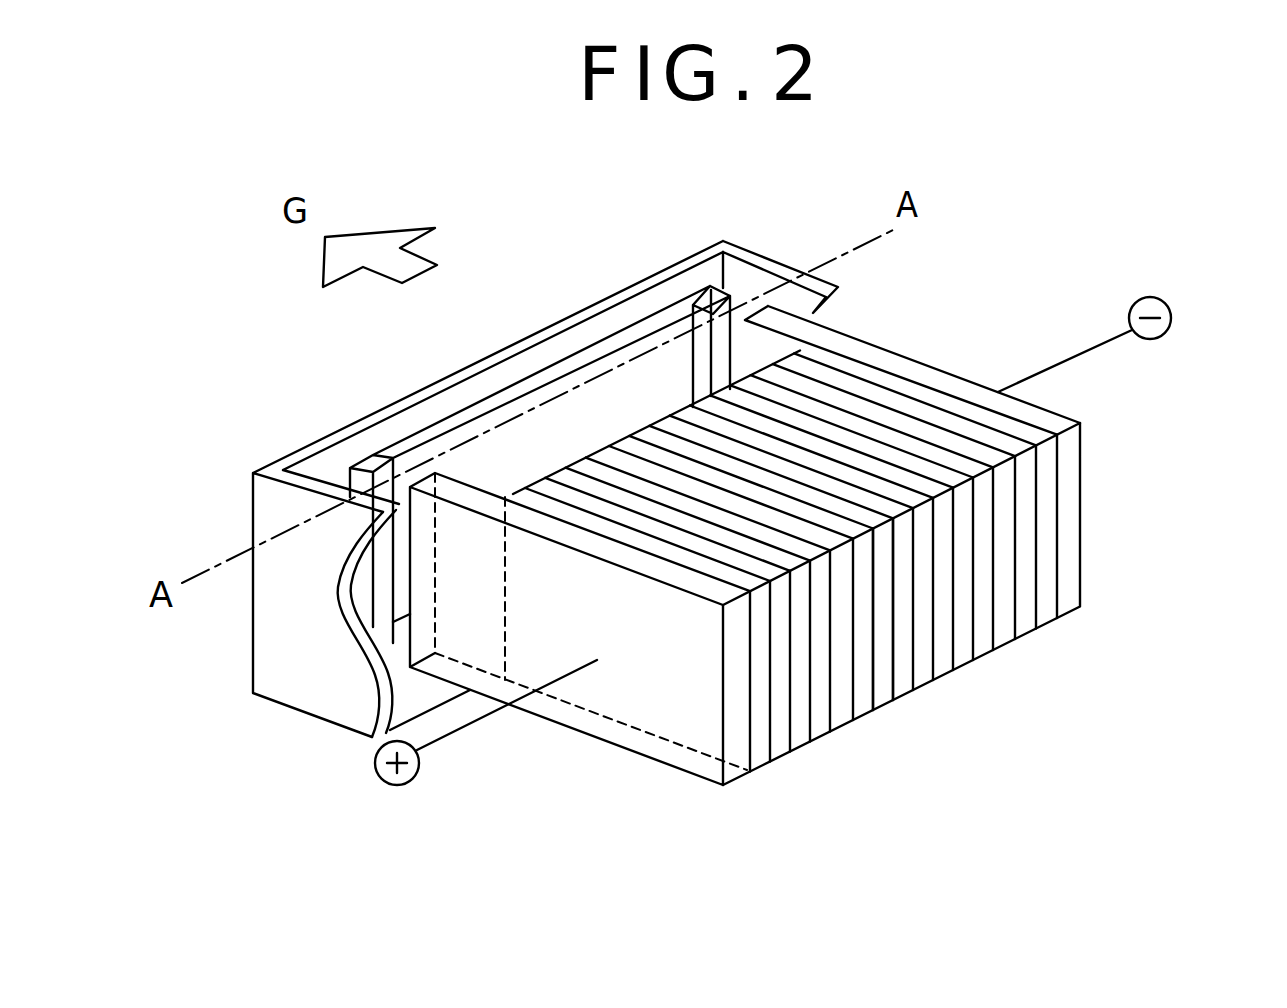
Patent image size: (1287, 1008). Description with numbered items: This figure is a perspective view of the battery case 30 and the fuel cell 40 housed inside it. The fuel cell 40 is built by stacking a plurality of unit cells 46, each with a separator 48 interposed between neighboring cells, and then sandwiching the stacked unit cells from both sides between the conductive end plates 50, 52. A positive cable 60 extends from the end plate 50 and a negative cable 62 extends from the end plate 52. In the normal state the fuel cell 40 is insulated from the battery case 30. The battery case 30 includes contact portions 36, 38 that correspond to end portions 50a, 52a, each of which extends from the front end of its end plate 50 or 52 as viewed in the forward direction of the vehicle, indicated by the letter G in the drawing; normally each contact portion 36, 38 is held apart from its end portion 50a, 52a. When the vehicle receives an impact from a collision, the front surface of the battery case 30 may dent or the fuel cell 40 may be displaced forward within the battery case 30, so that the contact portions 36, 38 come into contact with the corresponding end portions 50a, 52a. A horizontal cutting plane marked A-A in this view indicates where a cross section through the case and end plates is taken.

The battery case 30 is at (722, 240).
The contact portion 36 is at (365, 583).
The contact portion 38 is at (702, 368).
The fuel cell 40 is at (846, 533).
The unit cell 46 is at (883, 690).
The separator 48 is at (853, 710).
The end plate 50 is at (580, 678).
The end portion 50a is at (485, 502).
The end plate 52 is at (1045, 420).
The end portion 52a is at (830, 342).
The positive cable 60 is at (413, 782).
The negative cable 62 is at (1163, 298).